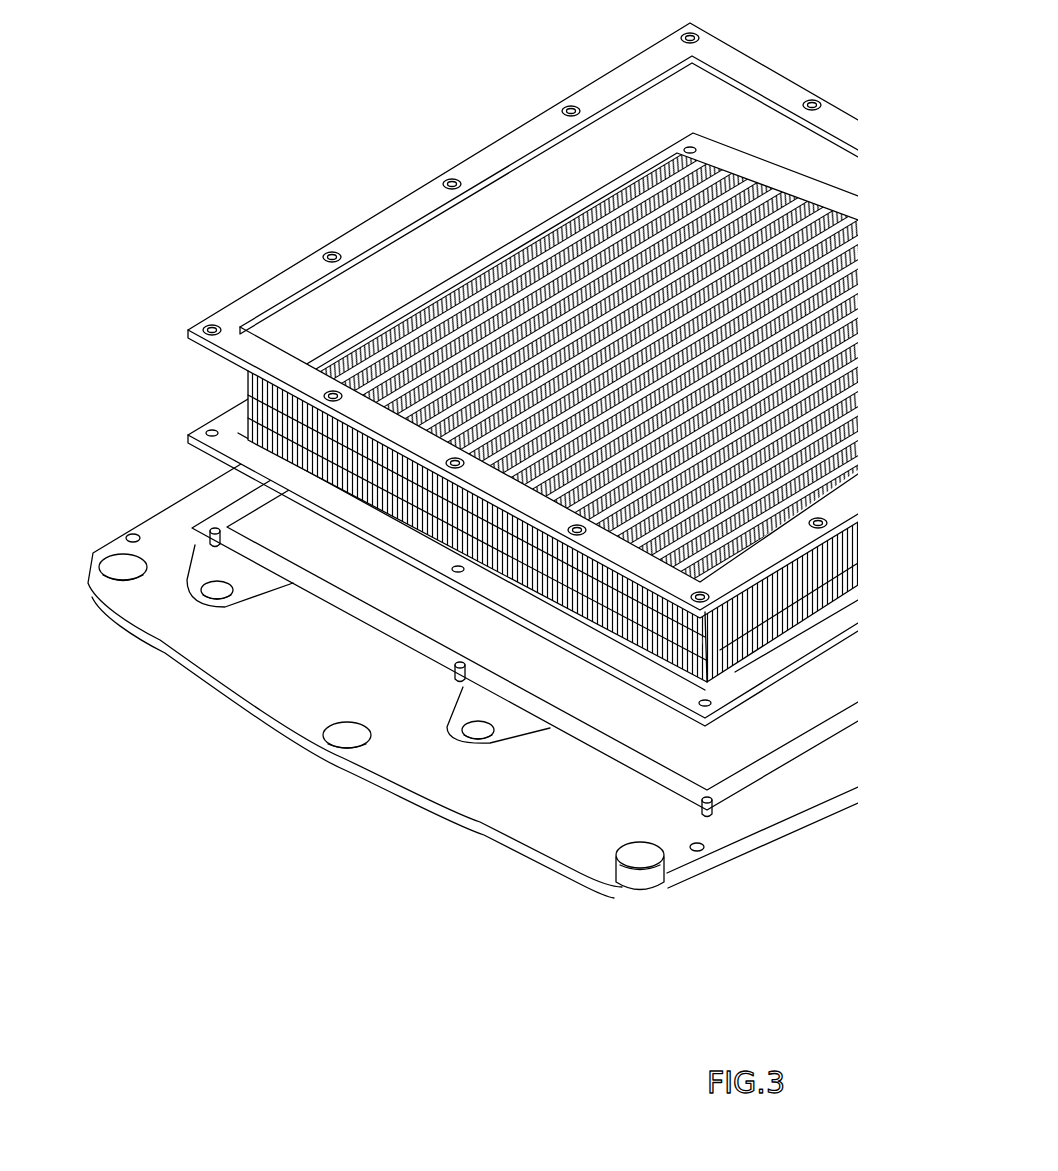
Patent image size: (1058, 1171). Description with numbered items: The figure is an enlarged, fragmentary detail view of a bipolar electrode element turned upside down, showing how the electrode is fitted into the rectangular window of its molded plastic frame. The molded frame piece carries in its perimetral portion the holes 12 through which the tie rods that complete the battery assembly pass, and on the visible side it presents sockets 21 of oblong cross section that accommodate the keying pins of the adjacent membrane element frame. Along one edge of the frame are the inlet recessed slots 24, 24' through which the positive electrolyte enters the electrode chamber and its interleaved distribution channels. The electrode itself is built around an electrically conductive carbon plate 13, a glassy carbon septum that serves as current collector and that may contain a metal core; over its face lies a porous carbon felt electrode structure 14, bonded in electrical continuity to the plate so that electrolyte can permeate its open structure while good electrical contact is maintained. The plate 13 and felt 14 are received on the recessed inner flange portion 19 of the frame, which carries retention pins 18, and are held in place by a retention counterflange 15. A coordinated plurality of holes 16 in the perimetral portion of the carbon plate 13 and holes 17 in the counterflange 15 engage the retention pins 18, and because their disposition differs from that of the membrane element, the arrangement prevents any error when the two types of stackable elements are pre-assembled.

The holes 12 is at (118, 567).
The conductive plate 13 is at (225, 422).
The carbon felt electrode structure 14 is at (256, 398).
The retention counterflange 15 is at (373, 223).
The holes 16 is at (263, 695).
The holes 17 is at (323, 250).
The retention pins 18 is at (218, 536).
The recessed inner flange portion 19 is at (265, 509).
The sockets 21 is at (132, 534).
The inlet recessed slot 24 is at (186, 608).
The inlet recessed slot 24' is at (471, 803).